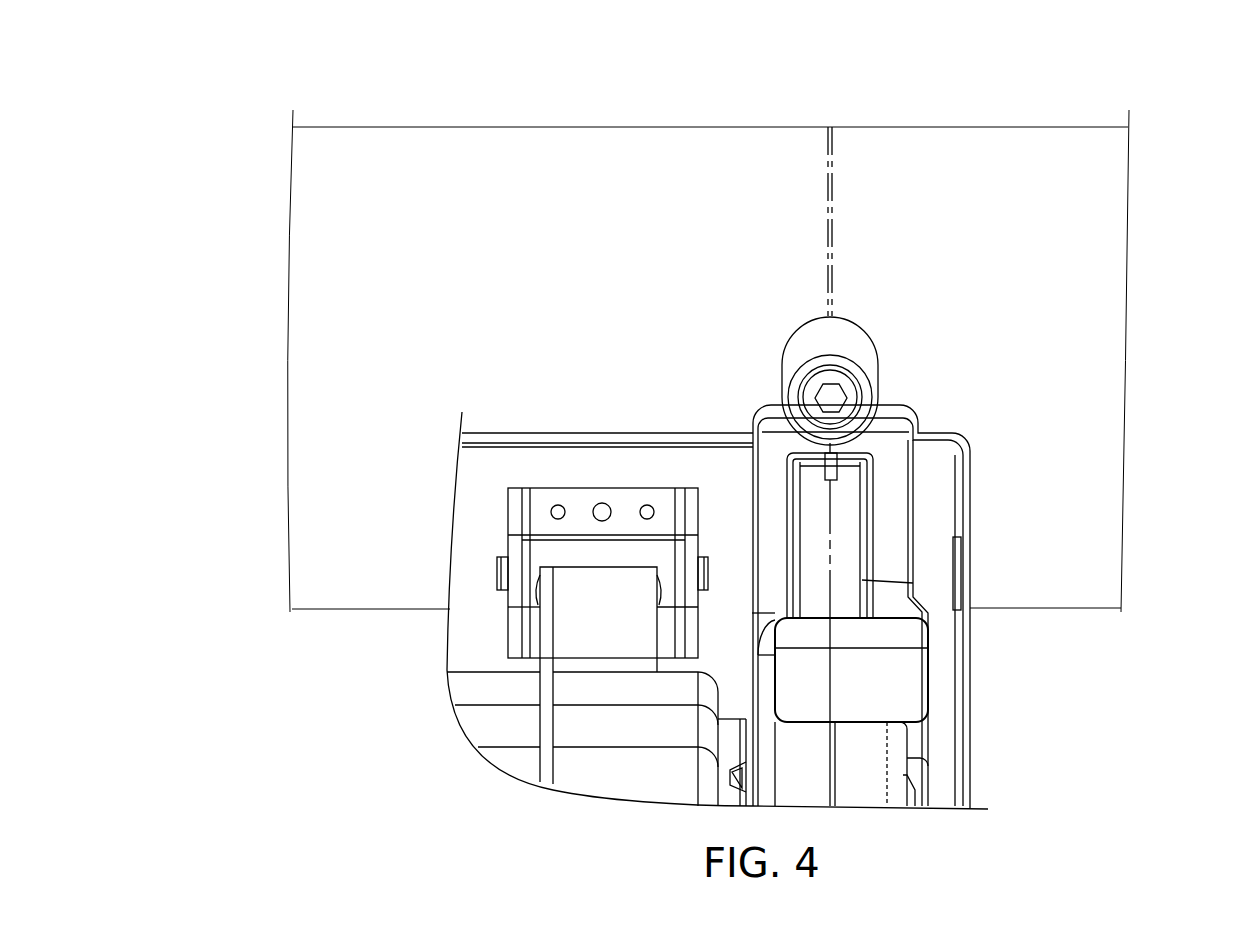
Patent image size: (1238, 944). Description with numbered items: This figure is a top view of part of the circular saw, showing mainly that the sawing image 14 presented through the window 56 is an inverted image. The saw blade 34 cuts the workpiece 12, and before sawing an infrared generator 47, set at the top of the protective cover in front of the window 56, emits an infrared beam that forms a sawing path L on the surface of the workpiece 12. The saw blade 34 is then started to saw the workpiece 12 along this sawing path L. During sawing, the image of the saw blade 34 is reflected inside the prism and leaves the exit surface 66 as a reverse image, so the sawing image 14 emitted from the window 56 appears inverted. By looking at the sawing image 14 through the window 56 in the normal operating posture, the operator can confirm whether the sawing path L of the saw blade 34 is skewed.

The workpiece 12 is at (410, 152).
The sawing path L is at (827, 215).
The sawing image 14 is at (852, 612).
The saw blade 34 is at (830, 472).
The infrared generator 47 is at (842, 332).
The window 56 is at (862, 537).
The exit surface 66 is at (843, 512).